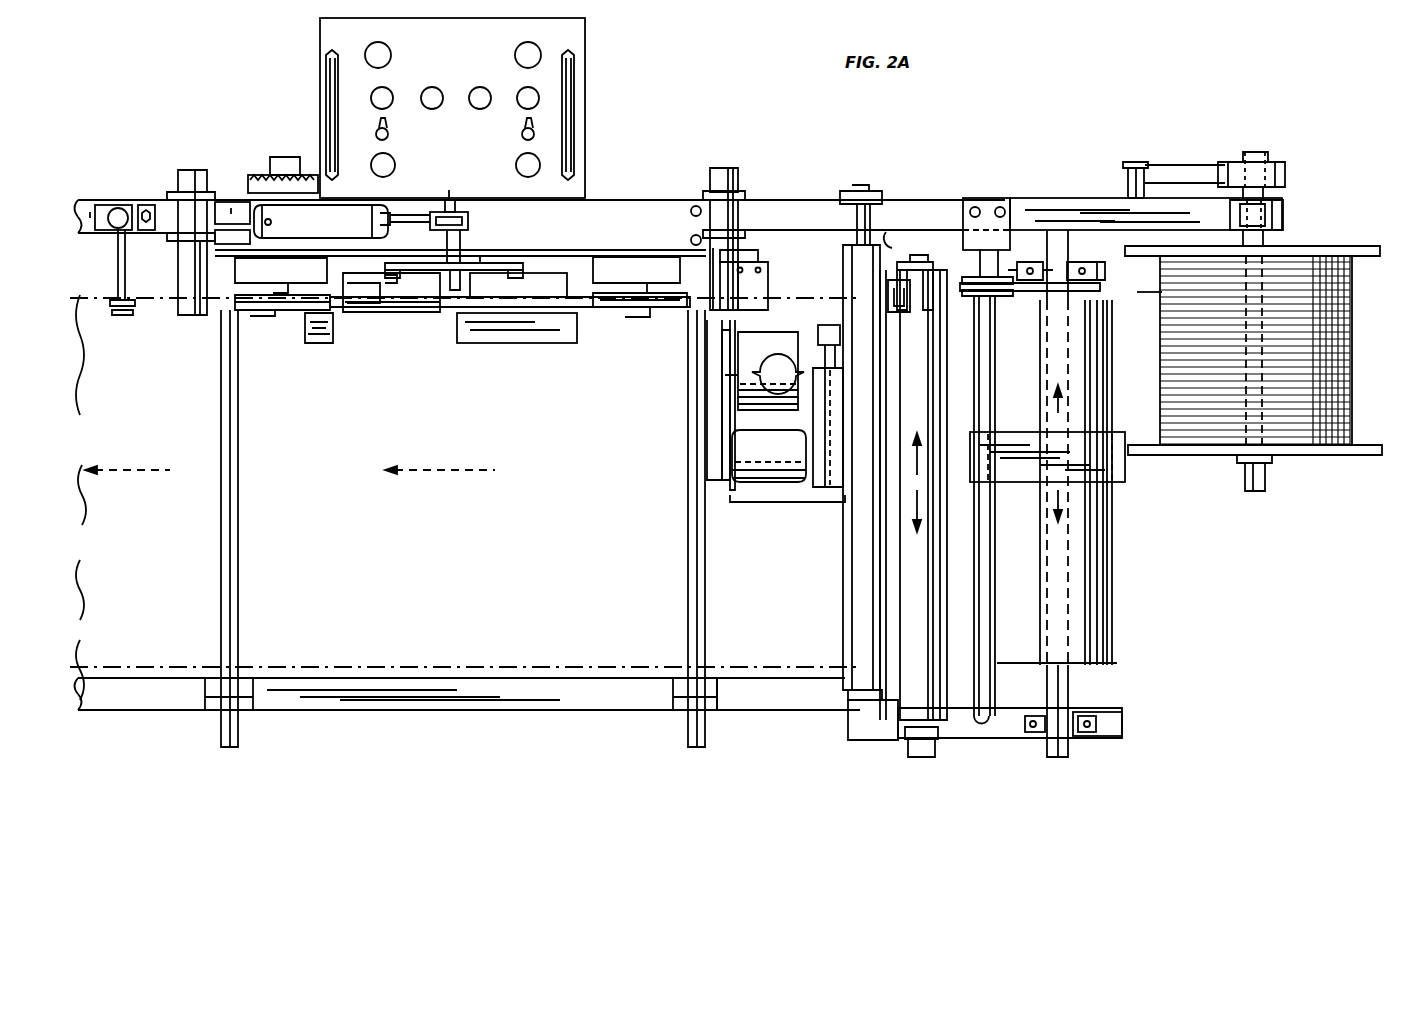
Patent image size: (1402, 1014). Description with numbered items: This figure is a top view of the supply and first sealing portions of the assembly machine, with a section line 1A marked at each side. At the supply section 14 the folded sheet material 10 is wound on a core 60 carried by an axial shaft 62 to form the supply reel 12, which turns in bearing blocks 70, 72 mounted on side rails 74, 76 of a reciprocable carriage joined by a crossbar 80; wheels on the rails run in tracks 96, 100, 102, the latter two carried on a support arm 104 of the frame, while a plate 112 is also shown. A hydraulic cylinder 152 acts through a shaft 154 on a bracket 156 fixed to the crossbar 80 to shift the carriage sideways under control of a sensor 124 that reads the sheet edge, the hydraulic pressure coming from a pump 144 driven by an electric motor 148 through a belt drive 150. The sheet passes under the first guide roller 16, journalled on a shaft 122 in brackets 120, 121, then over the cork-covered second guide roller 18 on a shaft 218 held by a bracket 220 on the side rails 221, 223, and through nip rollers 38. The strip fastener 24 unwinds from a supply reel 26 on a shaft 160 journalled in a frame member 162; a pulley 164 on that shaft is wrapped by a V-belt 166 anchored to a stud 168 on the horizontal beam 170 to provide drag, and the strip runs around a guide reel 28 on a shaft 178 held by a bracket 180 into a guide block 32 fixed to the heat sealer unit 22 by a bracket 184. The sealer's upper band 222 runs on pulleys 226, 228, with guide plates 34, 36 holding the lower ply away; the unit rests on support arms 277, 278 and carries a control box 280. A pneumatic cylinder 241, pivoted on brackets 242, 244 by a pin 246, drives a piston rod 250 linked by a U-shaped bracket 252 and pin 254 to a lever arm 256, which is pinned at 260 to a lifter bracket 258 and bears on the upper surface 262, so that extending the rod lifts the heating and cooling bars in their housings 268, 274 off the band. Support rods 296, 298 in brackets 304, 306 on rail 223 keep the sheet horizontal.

The folded sheet material 10 is at (797, 307).
The supply reel 12 is at (1085, 585).
The supply section 14 is at (1138, 605).
The first guide roller 16 is at (920, 613).
The second guide roller 18 is at (848, 614).
The first heat sealer unit 22 is at (630, 201).
The strip fastener 24 is at (1147, 292).
The supply reel 26 is at (1343, 250).
The guide reel 28 is at (990, 300).
The guide block 32 is at (757, 285).
The guide plate 34 is at (516, 330).
The guide plate 36 is at (320, 343).
The nip rollers 38 is at (127, 206).
The core 60 is at (1075, 670).
The axial shaft 62 is at (1068, 692).
The bearing block 70 is at (1075, 262).
The bearing block 72 is at (1075, 732).
The side rail 74 is at (1103, 265).
The side rail 76 is at (1122, 722).
The crossbar 80 is at (946, 565).
The track 96 is at (890, 232).
The track 100 is at (922, 757).
The track 102 is at (1055, 757).
The support arm 104 is at (980, 740).
The plate 112 is at (1020, 452).
The bracket 120 is at (925, 262).
The bracket 121 is at (870, 740).
The shaft 122 is at (905, 738).
The sensor 124 is at (900, 312).
The pump 144 is at (756, 345).
The electric motor 148 is at (787, 466).
The belt drive 150 is at (722, 425).
The hydraulic cylinder 152 is at (832, 485).
The shaft 154 is at (835, 358).
The bracket 156 is at (828, 325).
The shaft 160 is at (1258, 475).
The frame member 162 is at (1283, 210).
The pulley 164 is at (1275, 162).
The V-belt 166 is at (1178, 172).
The stud 168 is at (1135, 162).
The horizontal beam 170 is at (1080, 210).
The shaft 178 is at (1010, 265).
The bracket 180 is at (985, 204).
The bracket 184 is at (748, 265).
The shaft 218 is at (850, 212).
The bracket 220 is at (848, 700).
The side rail 221 is at (763, 205).
The upper band 222 is at (582, 304).
The side rail 223 is at (746, 690).
The first pulley 226 is at (256, 312).
The second pulley 228 is at (648, 312).
The pneumatic cylinder 241 is at (322, 221).
The bracket 242 is at (210, 240).
The bracket 244 is at (230, 200).
The pin 246 is at (235, 244).
The piston rod 250 is at (410, 213).
The U-shaped bracket 252 is at (470, 220).
The pin 254 is at (455, 200).
The lever arm 256 is at (462, 245).
The lifter bracket 258 is at (490, 262).
The pin connection 260 is at (455, 290).
The upper surface 262 is at (607, 256).
The housing 268 is at (375, 300).
The housing 274 is at (535, 290).
The support arm 277 is at (720, 168).
The support arm 278 is at (198, 290).
The control box 280 is at (585, 90).
The support rod 296 is at (688, 548).
The support rod 298 is at (221, 453).
The bracket 304 is at (680, 690).
The bracket 306 is at (245, 678).
The section line 1A is at (1360, 568).